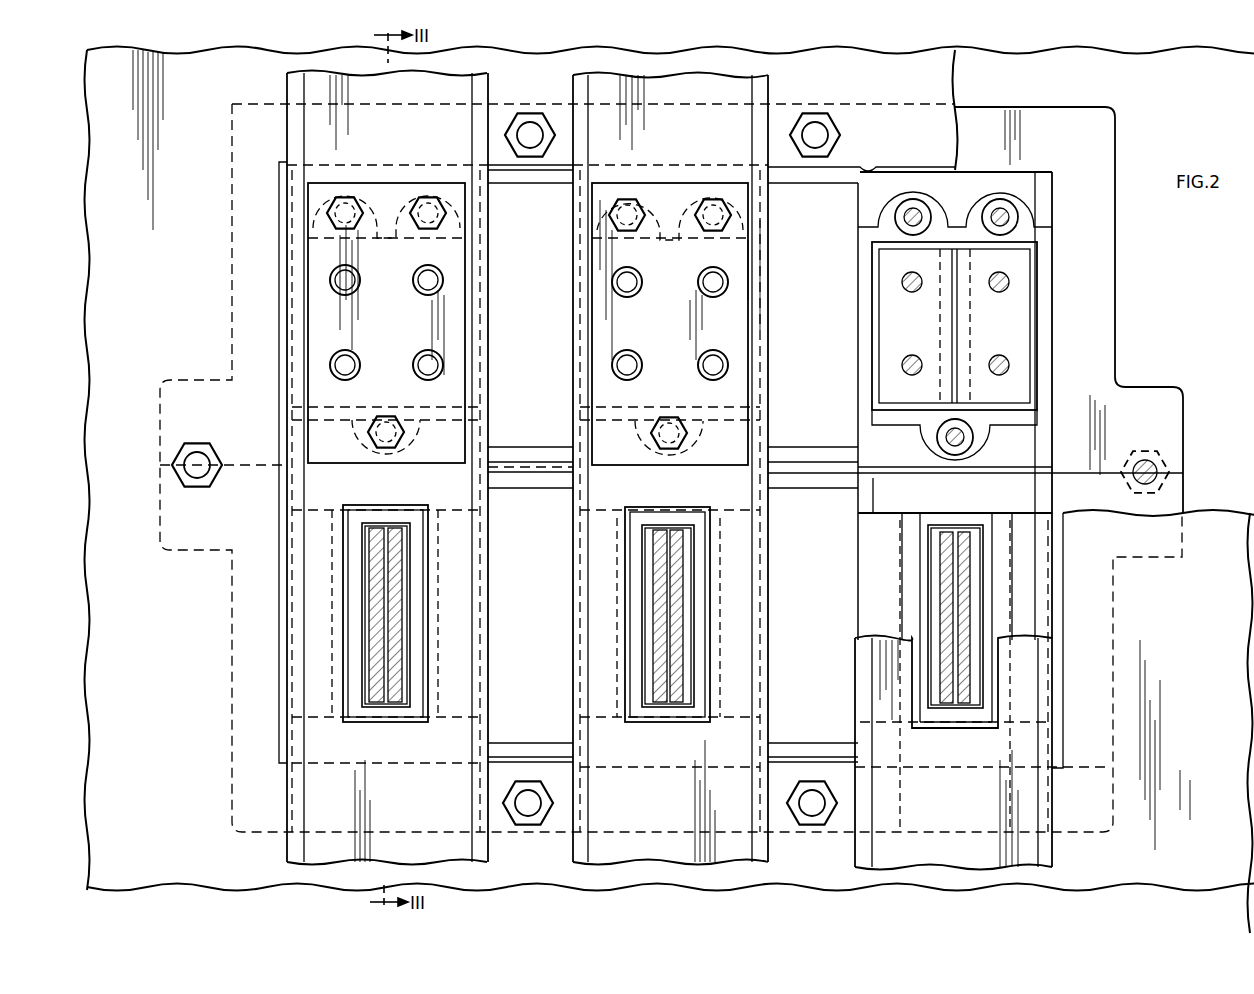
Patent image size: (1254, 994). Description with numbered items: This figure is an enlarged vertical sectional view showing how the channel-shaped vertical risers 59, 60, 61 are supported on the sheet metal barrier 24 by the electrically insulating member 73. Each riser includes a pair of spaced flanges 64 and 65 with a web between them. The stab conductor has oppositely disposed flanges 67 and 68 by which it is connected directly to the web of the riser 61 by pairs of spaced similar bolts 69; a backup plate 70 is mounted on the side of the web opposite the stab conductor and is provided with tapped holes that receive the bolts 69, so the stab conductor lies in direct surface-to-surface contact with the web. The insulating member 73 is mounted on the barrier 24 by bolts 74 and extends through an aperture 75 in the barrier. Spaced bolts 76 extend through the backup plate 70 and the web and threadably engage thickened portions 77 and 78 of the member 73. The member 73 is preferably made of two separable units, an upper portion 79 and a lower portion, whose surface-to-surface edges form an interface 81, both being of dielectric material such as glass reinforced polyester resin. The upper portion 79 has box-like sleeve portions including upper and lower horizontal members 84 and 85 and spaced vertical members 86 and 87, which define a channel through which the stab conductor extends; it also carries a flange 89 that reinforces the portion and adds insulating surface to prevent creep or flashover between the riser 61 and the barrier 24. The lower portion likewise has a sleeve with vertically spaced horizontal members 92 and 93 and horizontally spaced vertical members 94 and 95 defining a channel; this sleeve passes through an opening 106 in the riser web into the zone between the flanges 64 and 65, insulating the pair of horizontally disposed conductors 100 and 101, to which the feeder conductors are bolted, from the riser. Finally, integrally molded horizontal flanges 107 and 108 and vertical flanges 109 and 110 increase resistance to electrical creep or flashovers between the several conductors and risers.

The sheet metal barrier 24 is at (97, 342).
The vertical riser 59 is at (856, 851).
The vertical riser 60 is at (574, 235).
The vertical riser 61 is at (488, 265).
The flange 64 is at (480, 843).
The flange 65 is at (286, 791).
The flange 67 is at (1030, 378).
The flange 68 is at (879, 378).
The bolts 69 is at (413, 284).
The backup plate 70 is at (374, 183).
The electrically insulating member 73 is at (1178, 316).
The bolts 74 is at (524, 120).
The aperture 75 is at (868, 168).
The bolts 76 is at (416, 228).
The thickened portion 77 is at (420, 179).
The thickened portion 78 is at (352, 437).
The upper portion 79 is at (1116, 243).
The interface 81 is at (1082, 466).
The upper horizontal member 84 is at (1052, 184).
The lower horizontal member 85 is at (860, 420).
The vertical member 86 is at (858, 268).
The vertical member 87 is at (1040, 270).
The flange 89 is at (538, 180).
The horizontal member 92 is at (376, 506).
The horizontal member 93 is at (396, 714).
The vertical member 94 is at (350, 653).
The vertical member 95 is at (420, 650).
The conductor 100 is at (392, 524).
The conductor 101 is at (372, 594).
The opening 106 is at (374, 720).
The horizontal flange 107 is at (522, 448).
The horizontal flange 108 is at (508, 486).
The vertical flange 109 is at (481, 430).
The vertical flange 110 is at (588, 432).